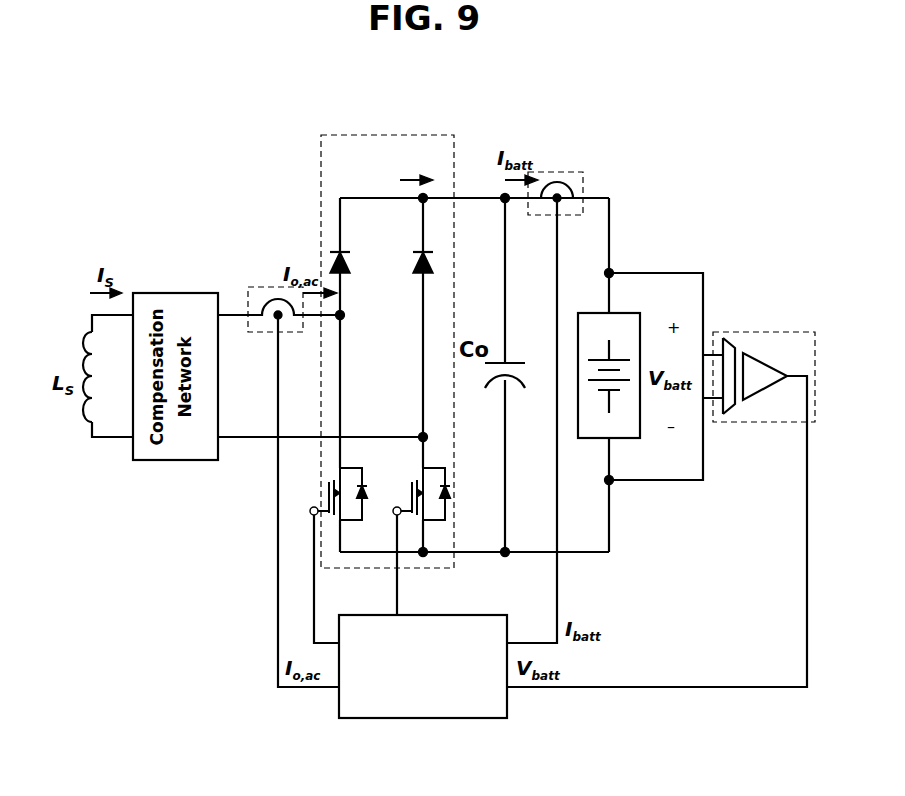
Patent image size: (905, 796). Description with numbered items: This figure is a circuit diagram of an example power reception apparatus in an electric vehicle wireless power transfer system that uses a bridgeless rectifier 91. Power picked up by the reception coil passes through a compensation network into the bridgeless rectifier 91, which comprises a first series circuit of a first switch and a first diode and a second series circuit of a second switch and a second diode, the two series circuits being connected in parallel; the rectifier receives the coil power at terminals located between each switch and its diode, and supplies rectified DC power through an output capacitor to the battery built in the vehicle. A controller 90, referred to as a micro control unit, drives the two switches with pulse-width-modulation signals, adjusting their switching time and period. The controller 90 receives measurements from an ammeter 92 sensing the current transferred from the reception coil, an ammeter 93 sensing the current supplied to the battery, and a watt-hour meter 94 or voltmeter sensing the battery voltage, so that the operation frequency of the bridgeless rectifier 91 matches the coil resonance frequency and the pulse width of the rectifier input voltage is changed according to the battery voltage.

The controller 90 is at (423, 720).
The bridgeless rectifier 91 is at (386, 134).
The ammeter 92 is at (257, 287).
The ammeter 93 is at (554, 171).
The watt-hour meter 94 is at (758, 332).